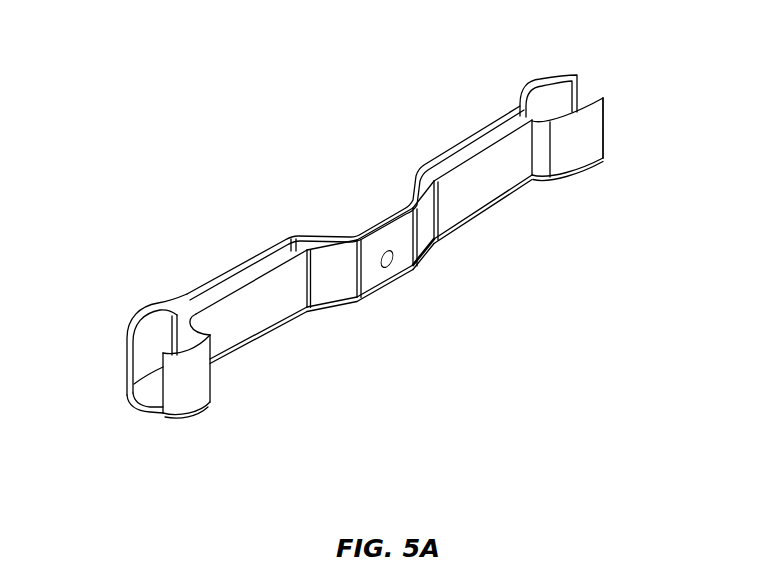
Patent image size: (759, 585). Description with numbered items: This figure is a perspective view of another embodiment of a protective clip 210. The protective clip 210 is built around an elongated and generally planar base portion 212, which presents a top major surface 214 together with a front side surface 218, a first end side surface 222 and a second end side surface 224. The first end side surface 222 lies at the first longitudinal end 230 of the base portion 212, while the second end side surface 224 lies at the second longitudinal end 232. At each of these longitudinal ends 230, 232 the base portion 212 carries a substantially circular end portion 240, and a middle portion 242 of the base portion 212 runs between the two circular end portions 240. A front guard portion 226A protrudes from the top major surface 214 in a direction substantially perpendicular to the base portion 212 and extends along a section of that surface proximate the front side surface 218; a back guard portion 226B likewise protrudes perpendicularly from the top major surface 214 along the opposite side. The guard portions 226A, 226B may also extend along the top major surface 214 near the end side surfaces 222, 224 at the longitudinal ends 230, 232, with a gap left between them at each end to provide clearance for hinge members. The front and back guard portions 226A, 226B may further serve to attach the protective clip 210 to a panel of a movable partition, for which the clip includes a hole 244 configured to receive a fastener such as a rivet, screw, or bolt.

The protective clip 210 is at (210, 148).
The base portion 212 is at (137, 403).
The top major surface 214 is at (152, 383).
The front side surface 218 is at (283, 334).
The first end side surface 222 is at (605, 138).
The second end side surface 224 is at (148, 411).
The front guard portion 226A is at (483, 173).
The back guard portion 226B is at (427, 153).
The first longitudinal end 230 is at (614, 158).
The second longitudinal end 232 is at (178, 424).
The substantially circular end portion 240 is at (198, 402).
The middle portion 242 is at (392, 281).
The hole 244 is at (396, 262).